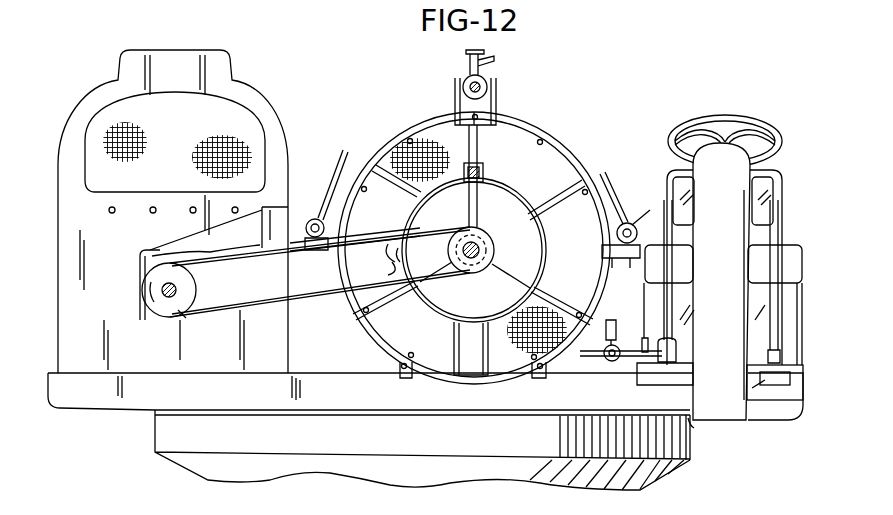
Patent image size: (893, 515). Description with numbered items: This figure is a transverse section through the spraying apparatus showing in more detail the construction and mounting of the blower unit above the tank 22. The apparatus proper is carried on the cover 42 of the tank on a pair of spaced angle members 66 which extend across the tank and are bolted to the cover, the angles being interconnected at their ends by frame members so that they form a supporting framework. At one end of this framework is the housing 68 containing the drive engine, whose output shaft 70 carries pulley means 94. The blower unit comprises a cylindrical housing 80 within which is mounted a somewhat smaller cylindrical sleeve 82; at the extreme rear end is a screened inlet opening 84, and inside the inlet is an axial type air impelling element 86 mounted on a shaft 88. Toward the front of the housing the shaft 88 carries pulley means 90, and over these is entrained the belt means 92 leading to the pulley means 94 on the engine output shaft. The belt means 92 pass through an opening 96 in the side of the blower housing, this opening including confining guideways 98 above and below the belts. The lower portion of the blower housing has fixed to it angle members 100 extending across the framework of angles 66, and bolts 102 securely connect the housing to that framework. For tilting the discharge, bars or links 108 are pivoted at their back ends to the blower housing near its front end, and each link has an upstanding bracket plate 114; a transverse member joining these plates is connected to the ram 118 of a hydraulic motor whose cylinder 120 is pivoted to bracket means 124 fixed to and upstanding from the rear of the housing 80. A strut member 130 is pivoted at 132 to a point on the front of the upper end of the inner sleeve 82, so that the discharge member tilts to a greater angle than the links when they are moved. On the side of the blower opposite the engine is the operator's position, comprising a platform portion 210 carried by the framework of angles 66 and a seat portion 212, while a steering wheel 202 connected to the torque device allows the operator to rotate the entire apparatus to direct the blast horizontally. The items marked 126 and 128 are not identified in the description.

The tank 22 is at (695, 450).
The lid or cover 42 is at (690, 428).
The angle members 66 is at (95, 408).
The housing 68 is at (62, 241).
The output shaft 70 is at (163, 288).
The pulley means 94 is at (182, 316).
The belt means 92 is at (316, 303).
The opening 96 is at (355, 268).
The confining guideways 98 is at (396, 262).
The cylindrical housing 80 is at (575, 172).
The cylindrical sleeve 82 is at (520, 178).
The screened inlet opening 84 is at (522, 138).
The shaft 88 is at (480, 247).
The pulley means 90 is at (496, 249).
The strut member 130 is at (482, 184).
The pivot 132 is at (494, 158).
The bracket means 124 is at (497, 90).
The ram 118 is at (482, 81).
The cylinder 120 is at (466, 72).
The control lever 126 is at (519, 54).
The lever arm 128 is at (492, 58).
The bracket plate 114 is at (627, 175).
The bars or links 108 is at (640, 222).
The air impelling element 86 is at (605, 245).
The angle members 100 is at (540, 378).
The bolts 102 is at (546, 368).
The steering wheel 202 is at (770, 132).
The seat portion 212 is at (790, 222).
The platform portion 210 is at (776, 365).